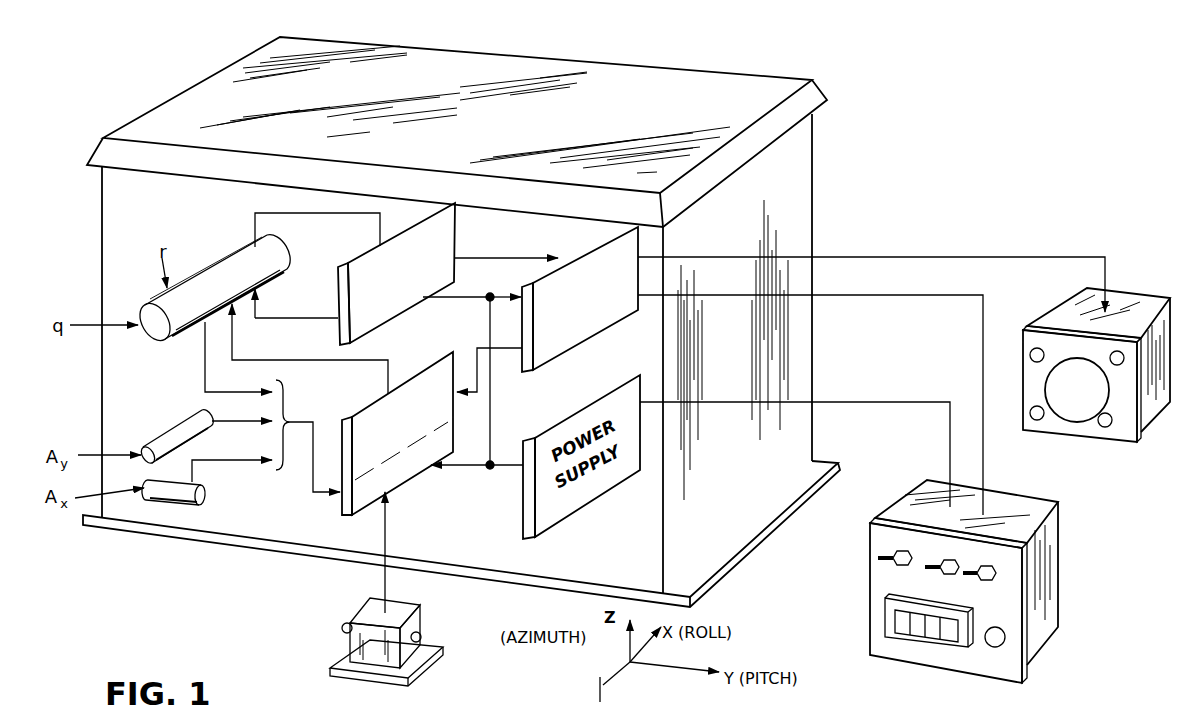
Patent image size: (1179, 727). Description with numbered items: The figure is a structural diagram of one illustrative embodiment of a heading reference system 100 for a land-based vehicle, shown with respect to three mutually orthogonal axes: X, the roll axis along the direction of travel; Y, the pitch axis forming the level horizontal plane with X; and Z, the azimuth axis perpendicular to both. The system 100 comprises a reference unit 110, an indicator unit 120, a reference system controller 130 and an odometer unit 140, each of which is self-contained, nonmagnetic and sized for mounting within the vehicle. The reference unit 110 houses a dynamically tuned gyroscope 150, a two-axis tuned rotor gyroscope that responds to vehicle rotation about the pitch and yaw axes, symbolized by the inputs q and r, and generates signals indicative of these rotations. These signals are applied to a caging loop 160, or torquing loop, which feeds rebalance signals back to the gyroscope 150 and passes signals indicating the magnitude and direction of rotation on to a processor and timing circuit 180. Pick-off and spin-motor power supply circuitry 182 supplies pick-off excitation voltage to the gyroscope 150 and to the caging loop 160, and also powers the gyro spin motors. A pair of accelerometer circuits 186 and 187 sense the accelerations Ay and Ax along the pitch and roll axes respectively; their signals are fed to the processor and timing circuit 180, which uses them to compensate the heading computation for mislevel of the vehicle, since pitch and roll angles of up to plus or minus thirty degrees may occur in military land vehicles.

The heading reference system 100 is at (882, 67).
The reference unit 110 is at (139, 530).
The indicator unit 120 is at (1085, 438).
The reference system controller 130 is at (926, 666).
The odometer unit 140 is at (428, 668).
The dynamically tuned gyroscope 150 is at (218, 265).
The caging loop 160 is at (415, 303).
The processor and timing circuit 180 is at (603, 330).
The pick-off and spin-motor power supply circuitry 182 is at (410, 480).
The accelerometer circuit 186 is at (173, 428).
The accelerometer circuit 187 is at (183, 503).